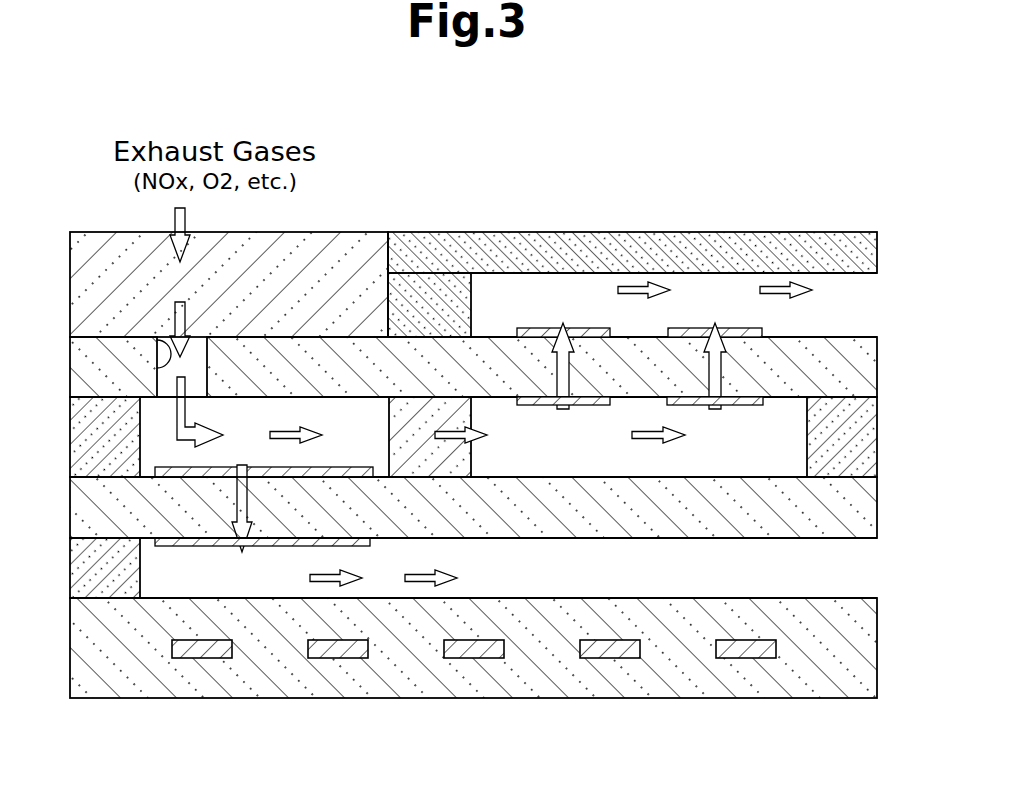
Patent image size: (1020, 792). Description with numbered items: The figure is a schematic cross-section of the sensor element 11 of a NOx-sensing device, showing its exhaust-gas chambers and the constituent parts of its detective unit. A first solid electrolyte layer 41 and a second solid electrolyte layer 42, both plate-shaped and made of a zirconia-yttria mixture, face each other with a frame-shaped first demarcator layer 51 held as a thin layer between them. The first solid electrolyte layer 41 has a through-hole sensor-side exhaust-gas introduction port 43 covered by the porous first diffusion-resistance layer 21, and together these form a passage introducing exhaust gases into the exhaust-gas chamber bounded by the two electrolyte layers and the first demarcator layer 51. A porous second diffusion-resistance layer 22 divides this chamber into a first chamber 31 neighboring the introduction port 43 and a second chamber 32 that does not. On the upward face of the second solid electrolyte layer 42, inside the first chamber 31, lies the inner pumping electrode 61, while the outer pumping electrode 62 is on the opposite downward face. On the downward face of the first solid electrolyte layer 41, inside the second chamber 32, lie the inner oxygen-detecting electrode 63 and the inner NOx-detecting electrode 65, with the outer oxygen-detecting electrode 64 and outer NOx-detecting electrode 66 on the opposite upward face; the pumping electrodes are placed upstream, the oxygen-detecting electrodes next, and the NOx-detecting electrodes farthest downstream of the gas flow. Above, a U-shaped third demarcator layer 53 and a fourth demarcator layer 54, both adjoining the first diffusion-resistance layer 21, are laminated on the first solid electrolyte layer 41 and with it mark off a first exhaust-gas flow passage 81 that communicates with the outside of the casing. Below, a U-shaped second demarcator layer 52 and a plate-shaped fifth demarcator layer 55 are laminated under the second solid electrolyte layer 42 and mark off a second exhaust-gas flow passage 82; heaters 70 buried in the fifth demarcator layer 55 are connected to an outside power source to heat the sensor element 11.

The sensor element 11 is at (674, 215).
The first diffusion-resistance layer 21 is at (357, 245).
The second diffusion-resistance layer 22 is at (478, 457).
The first chamber 31 is at (264, 437).
The second chamber 32 is at (639, 437).
The first solid electrolyte layer 41 is at (865, 338).
The second solid electrolyte layer 42 is at (822, 528).
The sensor-side exhaust-gas introduction port 43 is at (168, 345).
The first demarcator layer 51 is at (82, 440).
The second demarcator layer 52 is at (74, 564).
The third demarcator layer 53 is at (416, 292).
The fourth demarcator layer 54 is at (586, 238).
The fifth demarcator layer 55 is at (572, 685).
The inner pumping electrode 61 is at (170, 467).
The outer pumping electrode 62 is at (183, 541).
The inner oxygen-detecting electrode 63 is at (594, 410).
The outer oxygen-detecting electrode 64 is at (528, 330).
The inner NOx-detecting electrode 65 is at (753, 407).
The outer NOx-detecting electrode 66 is at (683, 330).
The heaters 70 is at (465, 652).
The first exhaust-gas flow passage 81 is at (840, 284).
The second exhaust-gas flow passage 82 is at (696, 594).